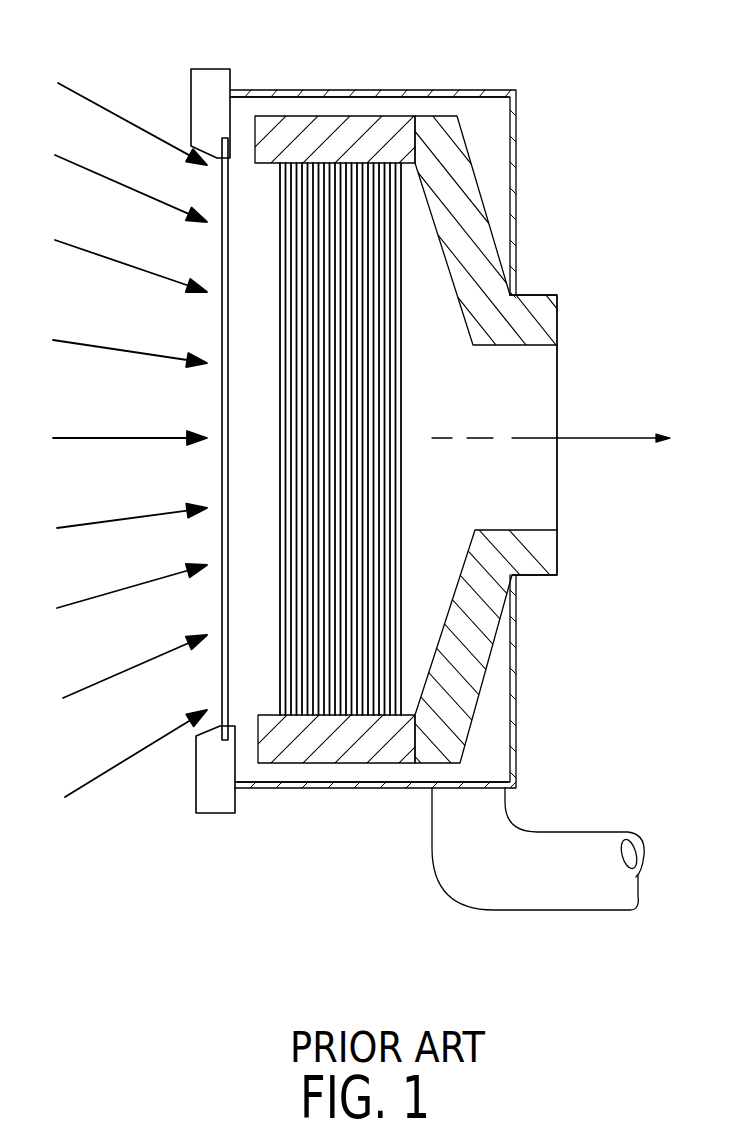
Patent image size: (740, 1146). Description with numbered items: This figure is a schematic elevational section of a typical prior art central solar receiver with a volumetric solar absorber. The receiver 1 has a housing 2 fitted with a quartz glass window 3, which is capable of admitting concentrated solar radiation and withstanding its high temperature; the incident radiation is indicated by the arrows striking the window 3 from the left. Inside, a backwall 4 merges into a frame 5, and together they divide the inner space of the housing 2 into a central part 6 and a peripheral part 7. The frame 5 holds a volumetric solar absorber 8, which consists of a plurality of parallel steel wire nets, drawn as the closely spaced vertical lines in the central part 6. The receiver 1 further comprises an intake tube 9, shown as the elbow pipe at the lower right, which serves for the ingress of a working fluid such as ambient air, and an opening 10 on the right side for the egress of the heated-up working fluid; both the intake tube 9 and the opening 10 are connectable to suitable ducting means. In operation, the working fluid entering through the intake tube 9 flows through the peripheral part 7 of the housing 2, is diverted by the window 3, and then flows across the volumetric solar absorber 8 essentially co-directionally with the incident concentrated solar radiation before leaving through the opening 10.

The receiver 1 is at (545, 80).
The housing 2 is at (346, 92).
The quartz glass window 3 is at (222, 318).
The backwall 4 is at (463, 207).
The frame 5 is at (290, 118).
The central part 6 is at (262, 471).
The peripheral part 7 is at (383, 108).
The volumetric solar absorber 8 is at (318, 541).
The intake tube 9 is at (518, 893).
The opening 10 is at (533, 389).